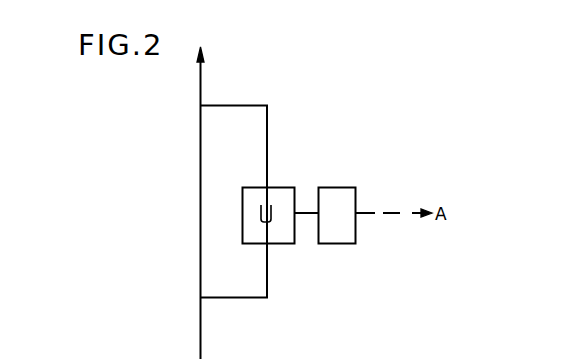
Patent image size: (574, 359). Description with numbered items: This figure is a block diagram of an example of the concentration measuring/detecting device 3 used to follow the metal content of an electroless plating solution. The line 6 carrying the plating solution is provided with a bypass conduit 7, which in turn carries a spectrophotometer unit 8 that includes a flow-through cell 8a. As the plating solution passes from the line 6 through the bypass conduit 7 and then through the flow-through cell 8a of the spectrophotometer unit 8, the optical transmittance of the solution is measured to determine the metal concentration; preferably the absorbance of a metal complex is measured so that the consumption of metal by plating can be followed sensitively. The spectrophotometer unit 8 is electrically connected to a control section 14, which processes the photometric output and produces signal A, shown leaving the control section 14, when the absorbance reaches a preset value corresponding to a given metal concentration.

The concentration measuring/detecting device 3 is at (325, 130).
The line 6 is at (199, 207).
The bypass conduit 7 is at (248, 298).
The spectrophotometer unit 8 is at (283, 190).
The flow-through cell 8a is at (271, 215).
The control section 14 is at (342, 195).